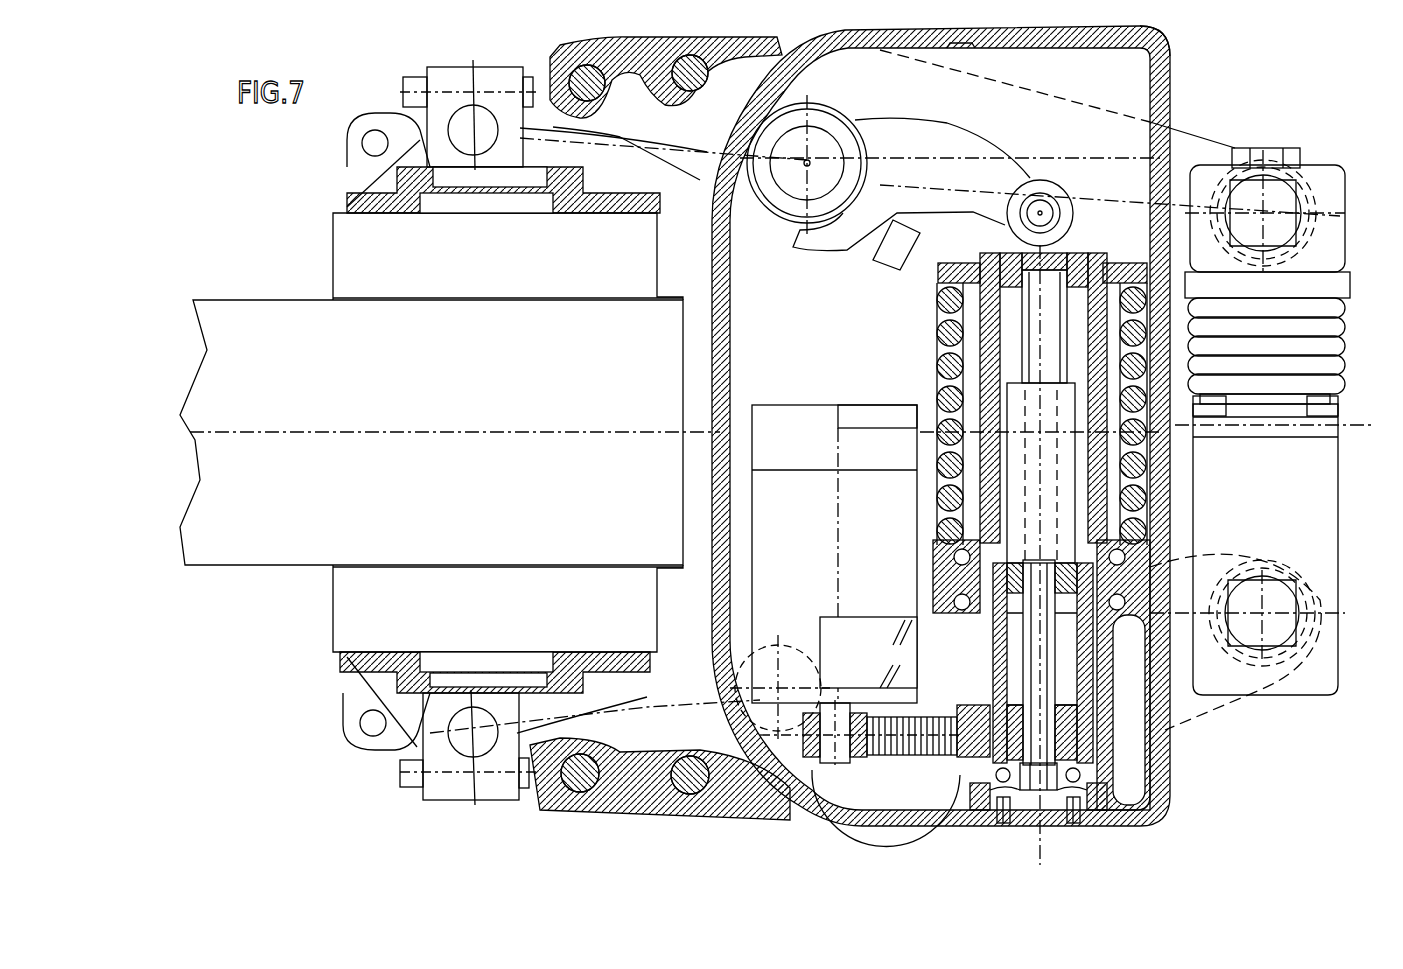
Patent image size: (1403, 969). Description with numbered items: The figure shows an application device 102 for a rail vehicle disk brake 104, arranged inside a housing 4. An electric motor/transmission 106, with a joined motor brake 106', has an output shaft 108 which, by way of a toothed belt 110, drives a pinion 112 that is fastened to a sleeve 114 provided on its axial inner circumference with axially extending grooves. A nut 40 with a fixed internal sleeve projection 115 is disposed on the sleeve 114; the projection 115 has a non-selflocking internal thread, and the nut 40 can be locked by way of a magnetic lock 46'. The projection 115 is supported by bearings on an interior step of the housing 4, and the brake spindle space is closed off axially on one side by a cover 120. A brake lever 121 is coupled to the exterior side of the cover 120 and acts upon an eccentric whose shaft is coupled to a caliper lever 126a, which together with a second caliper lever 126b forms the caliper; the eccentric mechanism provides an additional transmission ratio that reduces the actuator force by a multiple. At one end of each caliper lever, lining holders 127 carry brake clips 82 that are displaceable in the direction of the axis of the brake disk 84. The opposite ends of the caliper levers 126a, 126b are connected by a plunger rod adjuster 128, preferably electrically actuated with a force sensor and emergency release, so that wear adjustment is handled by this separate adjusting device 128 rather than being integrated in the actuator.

The housing 4 is at (1163, 53).
The application device 102 is at (1177, 87).
The brake clips 82 is at (343, 233).
The brake disk 84 is at (293, 318).
The rail vehicle disk brake 104 is at (325, 712).
The lining holders 127 is at (343, 650).
The caliper lever 126a is at (807, 63).
The second caliper lever 126b is at (747, 793).
The brake lever 121 is at (940, 133).
The cover 120 is at (1077, 250).
The electric motor/transmission 106 is at (772, 554).
The motor brake 106' is at (842, 399).
The magnetic lock 46' is at (868, 625).
The output shaft 108 is at (803, 810).
The toothed belt 110 is at (837, 813).
The pinion 112 is at (927, 807).
The sleeve 114 is at (963, 800).
The nut 40 is at (1117, 637).
The internal sleeve projection 115 is at (1167, 540).
The plunger rod adjuster 128 is at (1350, 340).